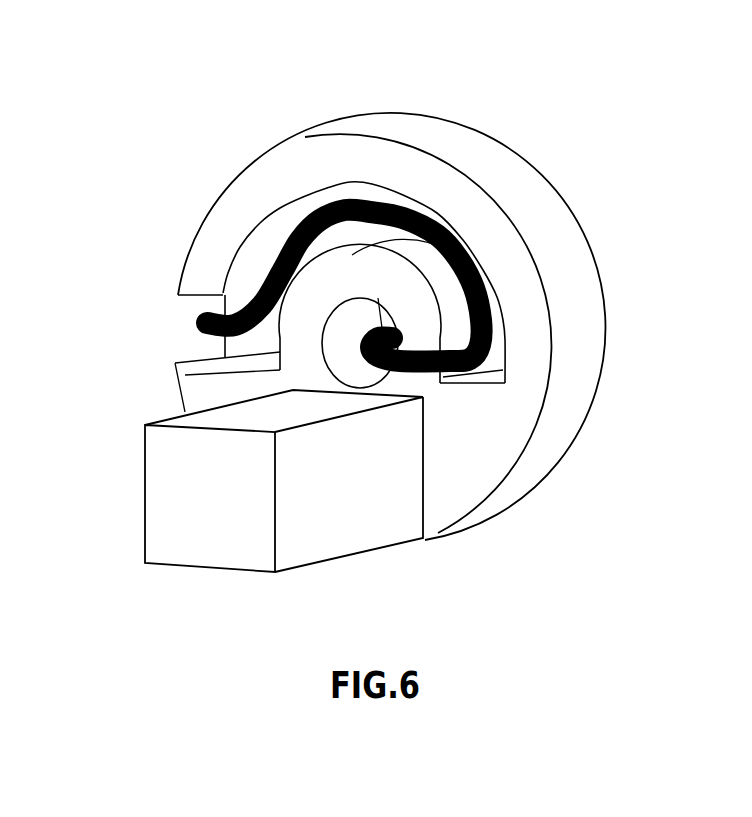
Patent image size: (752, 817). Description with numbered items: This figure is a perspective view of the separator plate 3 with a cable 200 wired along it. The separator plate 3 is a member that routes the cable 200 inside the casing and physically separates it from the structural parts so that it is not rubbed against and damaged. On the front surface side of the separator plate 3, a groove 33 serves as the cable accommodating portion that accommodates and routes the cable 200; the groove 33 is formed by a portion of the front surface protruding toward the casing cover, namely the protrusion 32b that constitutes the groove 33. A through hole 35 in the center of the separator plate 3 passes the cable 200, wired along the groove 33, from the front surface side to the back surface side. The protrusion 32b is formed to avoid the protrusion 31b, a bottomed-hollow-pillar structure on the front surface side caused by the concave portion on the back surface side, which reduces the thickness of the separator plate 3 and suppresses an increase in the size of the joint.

The separator plate 3 is at (512, 183).
The protrusion 32b is at (368, 279).
The groove 33 is at (270, 259).
The through hole 35 is at (342, 343).
The protrusion 31b is at (222, 513).
The cable 200 is at (433, 373).